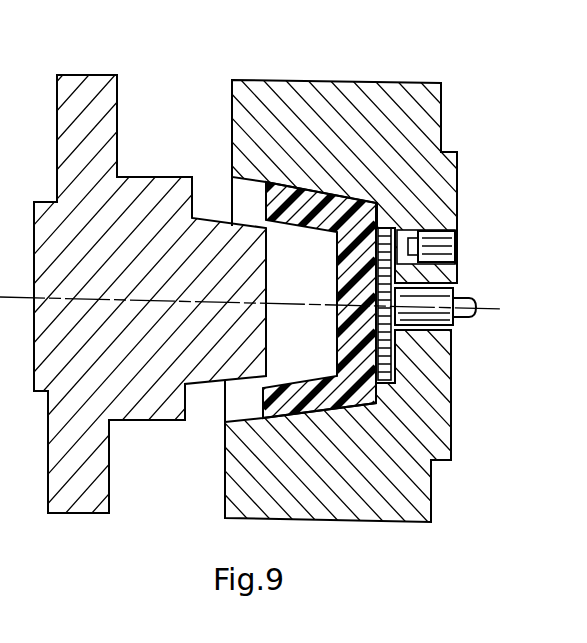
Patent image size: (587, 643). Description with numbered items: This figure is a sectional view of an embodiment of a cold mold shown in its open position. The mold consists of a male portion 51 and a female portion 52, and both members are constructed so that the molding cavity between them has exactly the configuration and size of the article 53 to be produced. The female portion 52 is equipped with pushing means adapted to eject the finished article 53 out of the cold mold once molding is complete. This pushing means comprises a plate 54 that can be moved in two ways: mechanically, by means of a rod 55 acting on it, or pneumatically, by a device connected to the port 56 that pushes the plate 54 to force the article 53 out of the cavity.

The male portion 51 is at (90, 92).
The female portion 52 is at (398, 95).
The article 53 is at (305, 190).
The plate 54 is at (384, 353).
The rod 55 is at (470, 302).
The port 56 is at (447, 240).